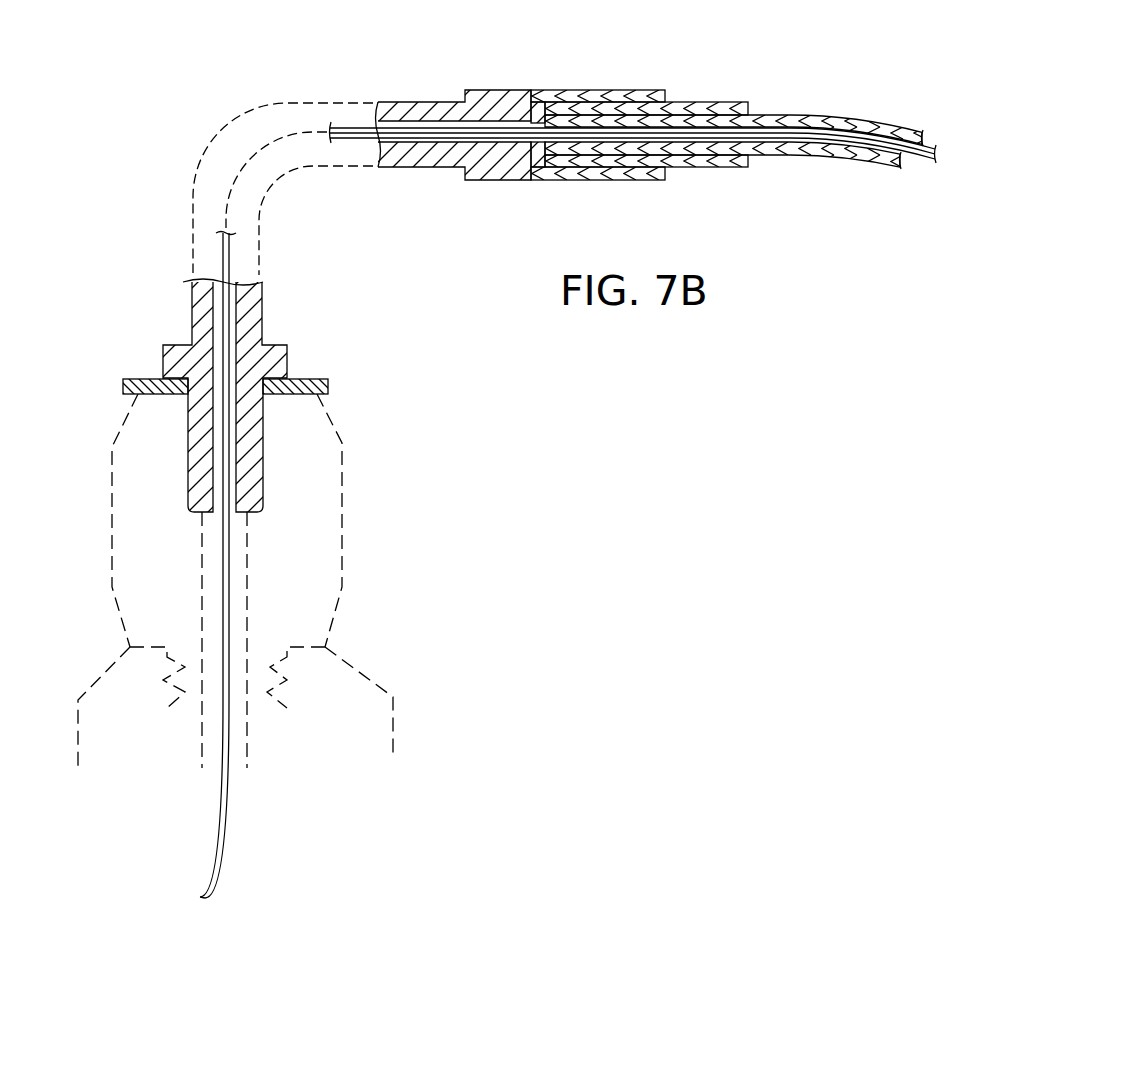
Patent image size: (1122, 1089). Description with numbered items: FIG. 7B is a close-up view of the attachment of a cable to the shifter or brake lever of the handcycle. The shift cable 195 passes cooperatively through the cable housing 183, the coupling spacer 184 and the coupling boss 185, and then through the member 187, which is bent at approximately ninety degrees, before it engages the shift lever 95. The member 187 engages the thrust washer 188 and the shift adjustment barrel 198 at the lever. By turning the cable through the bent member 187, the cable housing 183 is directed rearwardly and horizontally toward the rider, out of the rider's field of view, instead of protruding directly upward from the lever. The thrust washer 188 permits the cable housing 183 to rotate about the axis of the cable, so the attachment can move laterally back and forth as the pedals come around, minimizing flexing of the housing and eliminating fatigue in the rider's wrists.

The shift lever 95 is at (377, 677).
The cable housing 183 is at (857, 115).
The coupling spacer 184 is at (702, 102).
The coupling boss 185 is at (548, 90).
The member bent at approximately 90 degrees 187 is at (423, 112).
The thrust washer 188 is at (328, 381).
The shift cable 195 is at (355, 125).
The shift adjustment barrel 198 is at (342, 443).